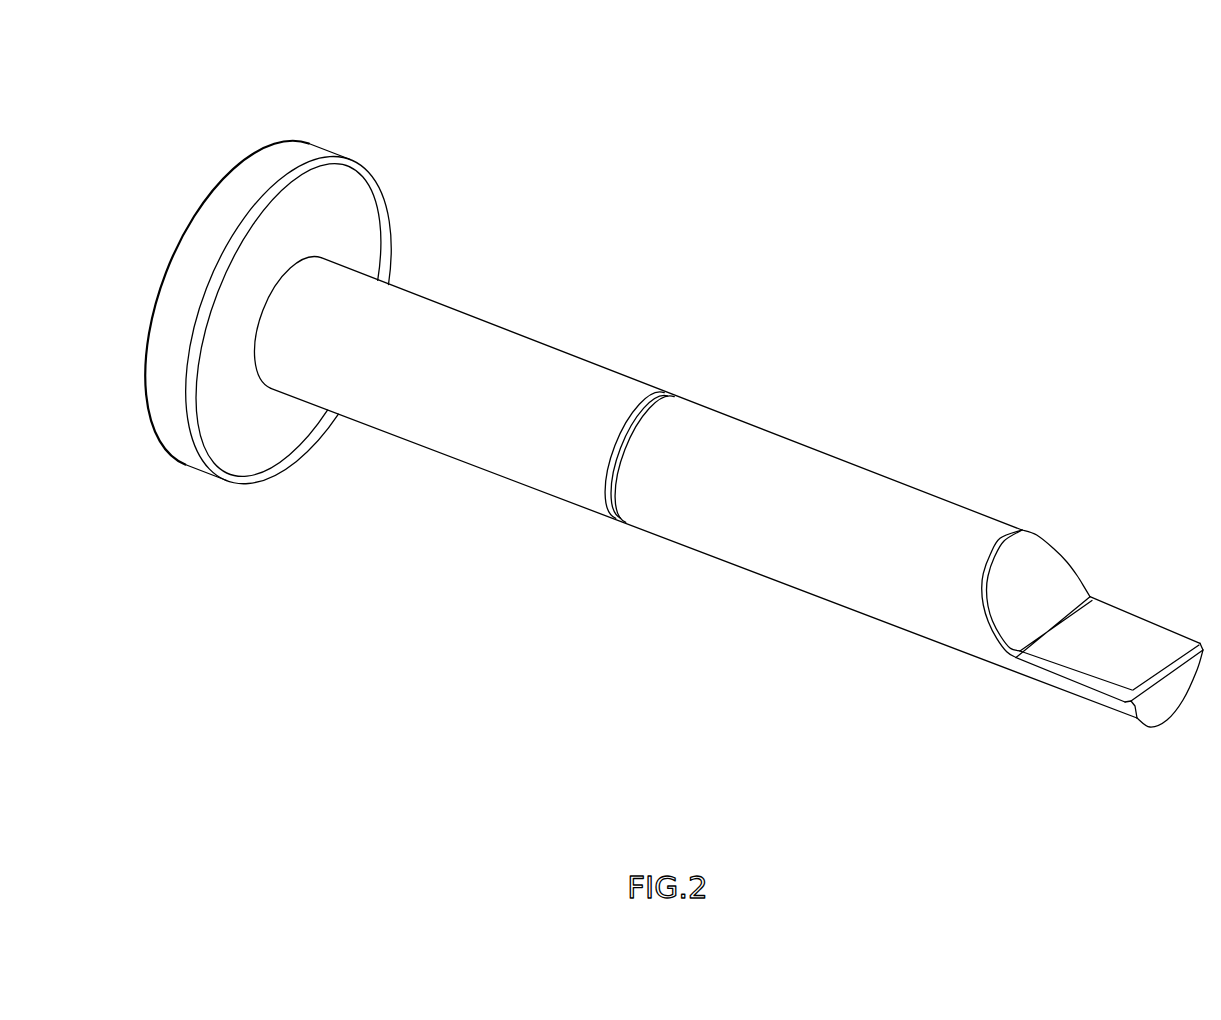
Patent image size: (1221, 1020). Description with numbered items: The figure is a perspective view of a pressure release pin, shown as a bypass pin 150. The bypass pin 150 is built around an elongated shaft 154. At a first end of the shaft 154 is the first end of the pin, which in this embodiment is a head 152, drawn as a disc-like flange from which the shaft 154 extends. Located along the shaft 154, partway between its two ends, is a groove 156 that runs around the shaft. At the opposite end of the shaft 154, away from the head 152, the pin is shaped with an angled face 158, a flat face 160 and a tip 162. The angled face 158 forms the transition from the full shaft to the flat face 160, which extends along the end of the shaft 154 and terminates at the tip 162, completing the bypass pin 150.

The bypass pin 150 is at (1071, 96).
The head 152 is at (290, 144).
The shaft 154 is at (504, 338).
The groove 156 is at (661, 393).
The angled face 158 is at (1059, 586).
The flat face 160 is at (1127, 629).
The tip 162 is at (1180, 695).